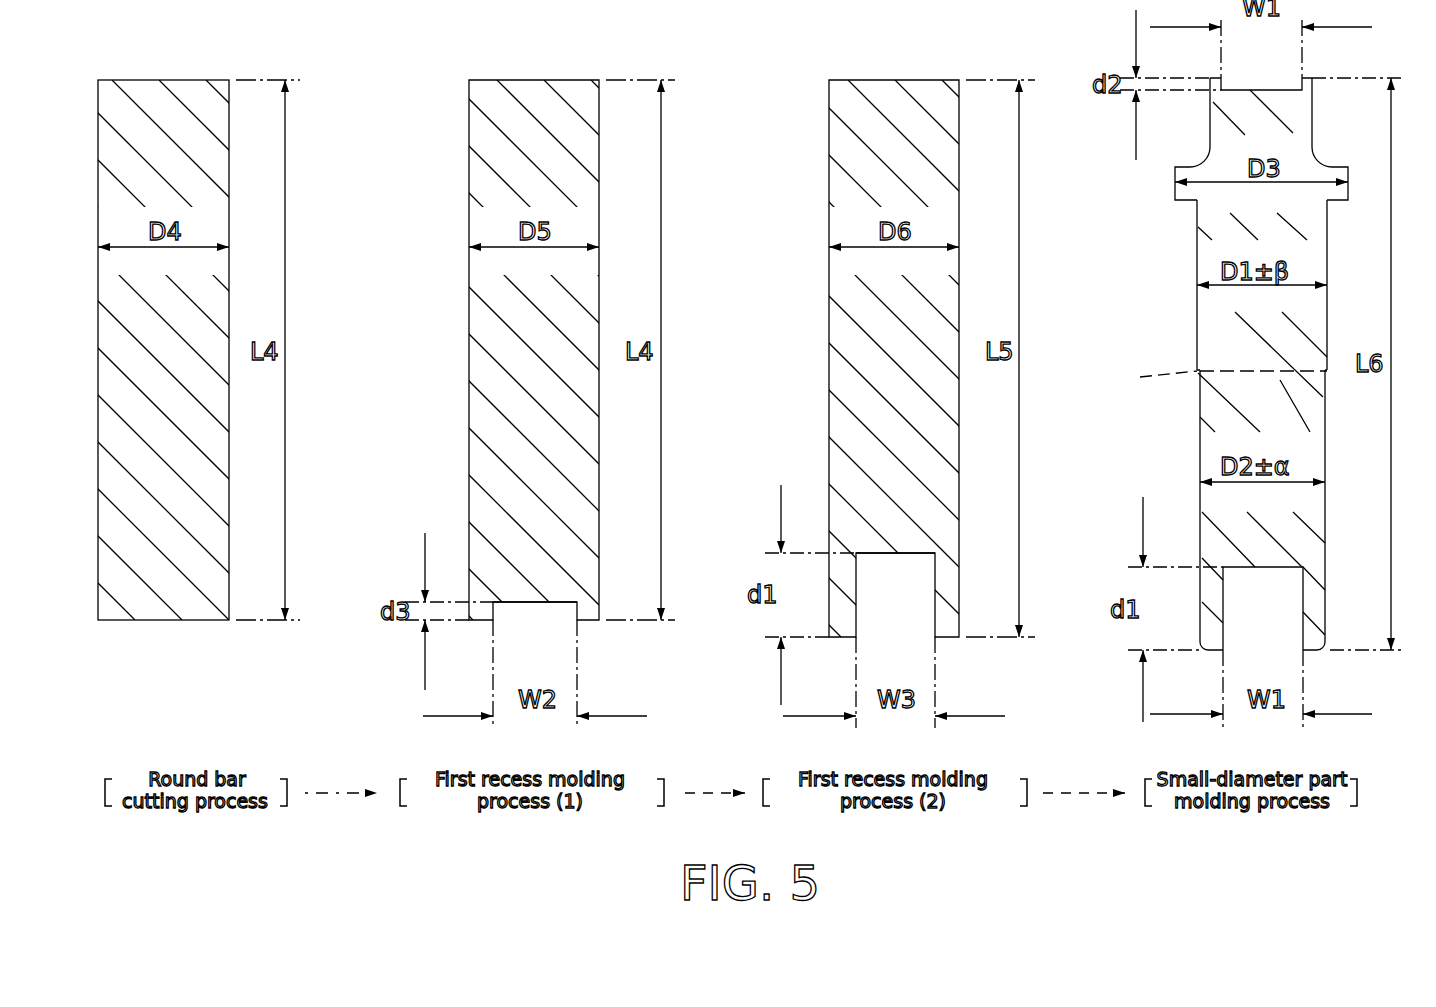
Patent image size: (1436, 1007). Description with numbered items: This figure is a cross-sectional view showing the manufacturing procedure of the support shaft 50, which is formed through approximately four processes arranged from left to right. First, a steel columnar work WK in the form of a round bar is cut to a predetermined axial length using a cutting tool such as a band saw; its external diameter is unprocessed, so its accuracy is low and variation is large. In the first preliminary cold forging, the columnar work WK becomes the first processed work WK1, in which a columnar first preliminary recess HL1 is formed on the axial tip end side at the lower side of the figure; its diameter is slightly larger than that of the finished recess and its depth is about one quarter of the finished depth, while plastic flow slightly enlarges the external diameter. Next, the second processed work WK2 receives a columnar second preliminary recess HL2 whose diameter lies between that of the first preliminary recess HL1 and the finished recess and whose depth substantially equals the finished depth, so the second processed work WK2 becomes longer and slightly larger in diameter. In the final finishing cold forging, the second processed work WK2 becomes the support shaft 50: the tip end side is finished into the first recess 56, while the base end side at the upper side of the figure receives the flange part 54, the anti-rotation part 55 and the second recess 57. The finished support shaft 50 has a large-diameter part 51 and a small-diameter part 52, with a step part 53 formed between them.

The columnar work WK is at (163, 538).
The first processed work WK1 is at (538, 378).
The second processed work WK2 is at (895, 345).
The first preliminary recess HL1 is at (545, 603).
The second preliminary recess HL2 is at (918, 610).
The support shaft 50 is at (1222, 342).
The large-diameter part 51 is at (1232, 343).
The small-diameter part 52 is at (1240, 404).
The step part 53 is at (1215, 374).
The flange part 54 is at (1177, 193).
The anti-rotation part 55 is at (1257, 118).
The first recess 56 is at (1278, 627).
The second recess 57 is at (1233, 90).